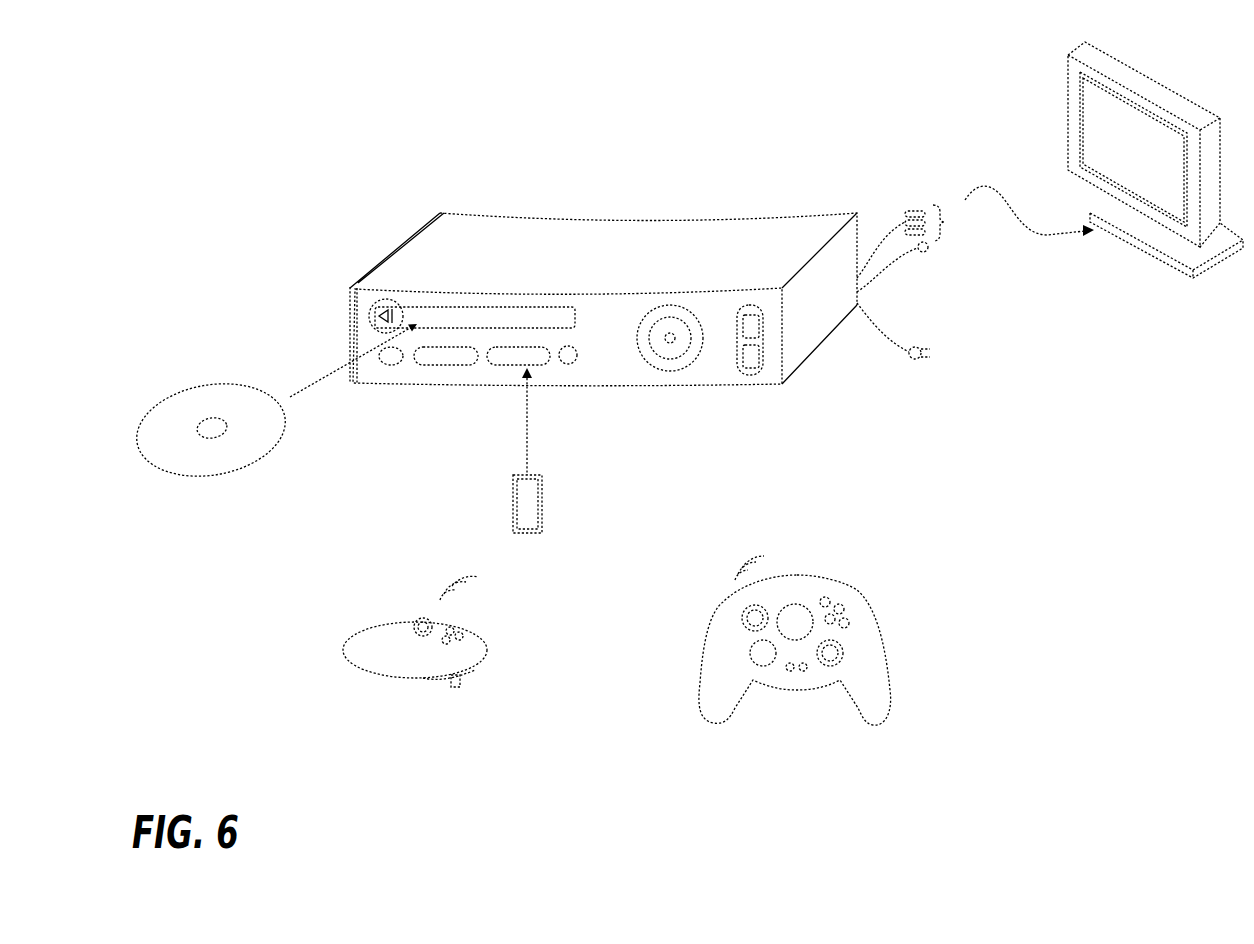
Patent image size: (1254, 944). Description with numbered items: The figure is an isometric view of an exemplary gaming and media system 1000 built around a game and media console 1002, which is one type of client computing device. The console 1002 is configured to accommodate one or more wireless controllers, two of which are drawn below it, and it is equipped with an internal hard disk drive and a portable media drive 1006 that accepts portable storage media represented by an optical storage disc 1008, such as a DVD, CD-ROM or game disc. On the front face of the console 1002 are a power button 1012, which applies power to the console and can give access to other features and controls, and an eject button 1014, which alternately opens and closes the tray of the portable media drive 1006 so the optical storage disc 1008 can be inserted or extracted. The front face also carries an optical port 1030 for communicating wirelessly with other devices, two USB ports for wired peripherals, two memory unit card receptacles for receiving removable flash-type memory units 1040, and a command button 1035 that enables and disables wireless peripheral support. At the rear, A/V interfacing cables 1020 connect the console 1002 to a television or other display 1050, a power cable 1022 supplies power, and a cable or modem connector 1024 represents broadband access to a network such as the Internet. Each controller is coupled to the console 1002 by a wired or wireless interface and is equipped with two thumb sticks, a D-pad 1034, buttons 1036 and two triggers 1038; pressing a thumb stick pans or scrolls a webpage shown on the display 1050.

The gaming and media system 1000 is at (634, 176).
The game and media console 1002 is at (475, 223).
The portable media drive 1006 is at (494, 302).
The optical storage disc 1008 is at (222, 474).
The power button 1012 is at (673, 371).
The eject button 1014 is at (369, 311).
The A/V interfacing cables 1020 is at (912, 212).
The power cable 1022 is at (910, 360).
The cable or modem connector 1024 is at (923, 253).
The optical port 1030 is at (391, 365).
The D-pad 1034 is at (749, 652).
The command button 1035 is at (567, 364).
The buttons 1036 is at (845, 611).
The triggers 1038 is at (456, 687).
The removable flash-type memory unit 1040 is at (530, 533).
The display 1050 is at (1068, 118).